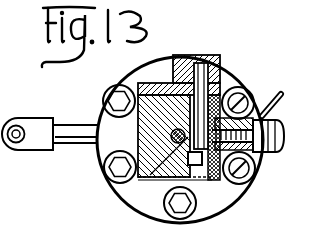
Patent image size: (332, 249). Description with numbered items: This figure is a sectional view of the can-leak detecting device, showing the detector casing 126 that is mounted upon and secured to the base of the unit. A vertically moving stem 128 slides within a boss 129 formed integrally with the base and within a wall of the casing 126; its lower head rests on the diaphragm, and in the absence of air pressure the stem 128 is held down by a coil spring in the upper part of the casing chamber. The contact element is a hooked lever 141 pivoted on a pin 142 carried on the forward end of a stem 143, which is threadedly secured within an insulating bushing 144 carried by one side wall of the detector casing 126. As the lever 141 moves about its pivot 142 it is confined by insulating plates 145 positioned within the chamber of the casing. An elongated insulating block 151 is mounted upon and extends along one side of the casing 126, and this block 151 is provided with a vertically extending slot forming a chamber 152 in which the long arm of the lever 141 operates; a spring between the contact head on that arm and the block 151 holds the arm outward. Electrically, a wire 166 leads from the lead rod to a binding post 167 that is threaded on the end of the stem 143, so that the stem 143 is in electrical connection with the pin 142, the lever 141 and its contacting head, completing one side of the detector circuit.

The detector casing 126 is at (226, 200).
The stem 128 is at (137, 178).
The boss 129 is at (97, 154).
The hooked lever 141 is at (223, 68).
The pin 142 is at (156, 179).
The stem 143 is at (263, 153).
The insulating bushing 144 is at (251, 173).
The insulating plates 145 is at (143, 83).
The insulating block 151 is at (186, 54).
The chamber 152 is at (209, 63).
The wire 166 is at (283, 96).
The binding post 167 is at (285, 138).